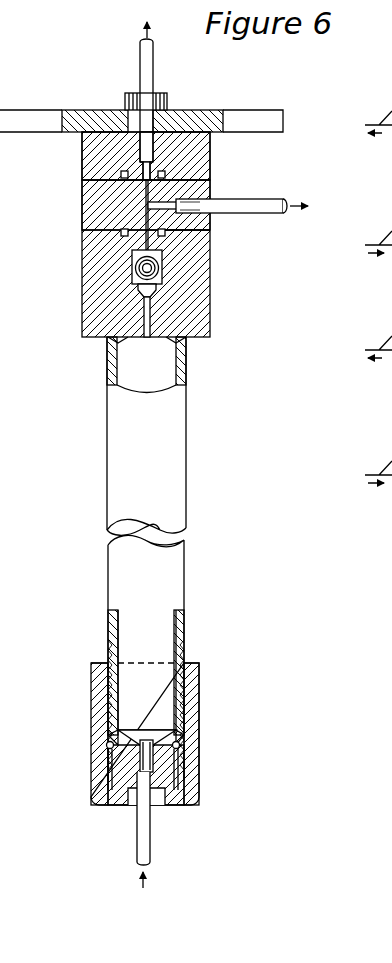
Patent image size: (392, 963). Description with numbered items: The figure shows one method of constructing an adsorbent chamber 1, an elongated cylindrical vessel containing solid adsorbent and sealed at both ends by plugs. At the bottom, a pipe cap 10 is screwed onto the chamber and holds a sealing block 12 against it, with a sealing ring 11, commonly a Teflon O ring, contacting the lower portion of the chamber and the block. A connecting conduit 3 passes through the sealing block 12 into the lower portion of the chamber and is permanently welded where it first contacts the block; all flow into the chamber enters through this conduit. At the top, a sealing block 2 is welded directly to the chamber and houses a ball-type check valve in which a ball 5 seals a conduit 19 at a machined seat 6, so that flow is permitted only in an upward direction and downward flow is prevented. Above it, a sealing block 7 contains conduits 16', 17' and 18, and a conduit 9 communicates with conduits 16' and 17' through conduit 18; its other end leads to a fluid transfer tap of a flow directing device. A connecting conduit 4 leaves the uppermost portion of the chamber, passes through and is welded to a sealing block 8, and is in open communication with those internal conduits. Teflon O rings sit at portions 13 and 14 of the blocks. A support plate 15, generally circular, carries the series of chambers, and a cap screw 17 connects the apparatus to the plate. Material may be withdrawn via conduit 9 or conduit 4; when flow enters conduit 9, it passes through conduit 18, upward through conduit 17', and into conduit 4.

The adsorbent chamber 1 is at (107, 412).
The sealing block 2 is at (162, 237).
The connecting conduit 3 is at (137, 825).
The connecting conduit 4 is at (139, 66).
The ball 5 is at (136, 266).
The seat 6 is at (137, 279).
The sealing block 7 is at (82, 195).
The sealing block 8 is at (82, 161).
The conduit 9 is at (243, 214).
The cap 10 is at (91, 681).
The sealing ring 11 is at (108, 745).
The sealing block 12 is at (125, 774).
The O ring portion 13 is at (130, 173).
The O ring portion 14 is at (168, 237).
The support plate 15 is at (238, 135).
The conduit 16' is at (129, 223).
The cap screw 17 is at (127, 87).
The conduit 17' is at (120, 215).
The conduit 18 is at (162, 203).
The conduit 19 is at (152, 306).